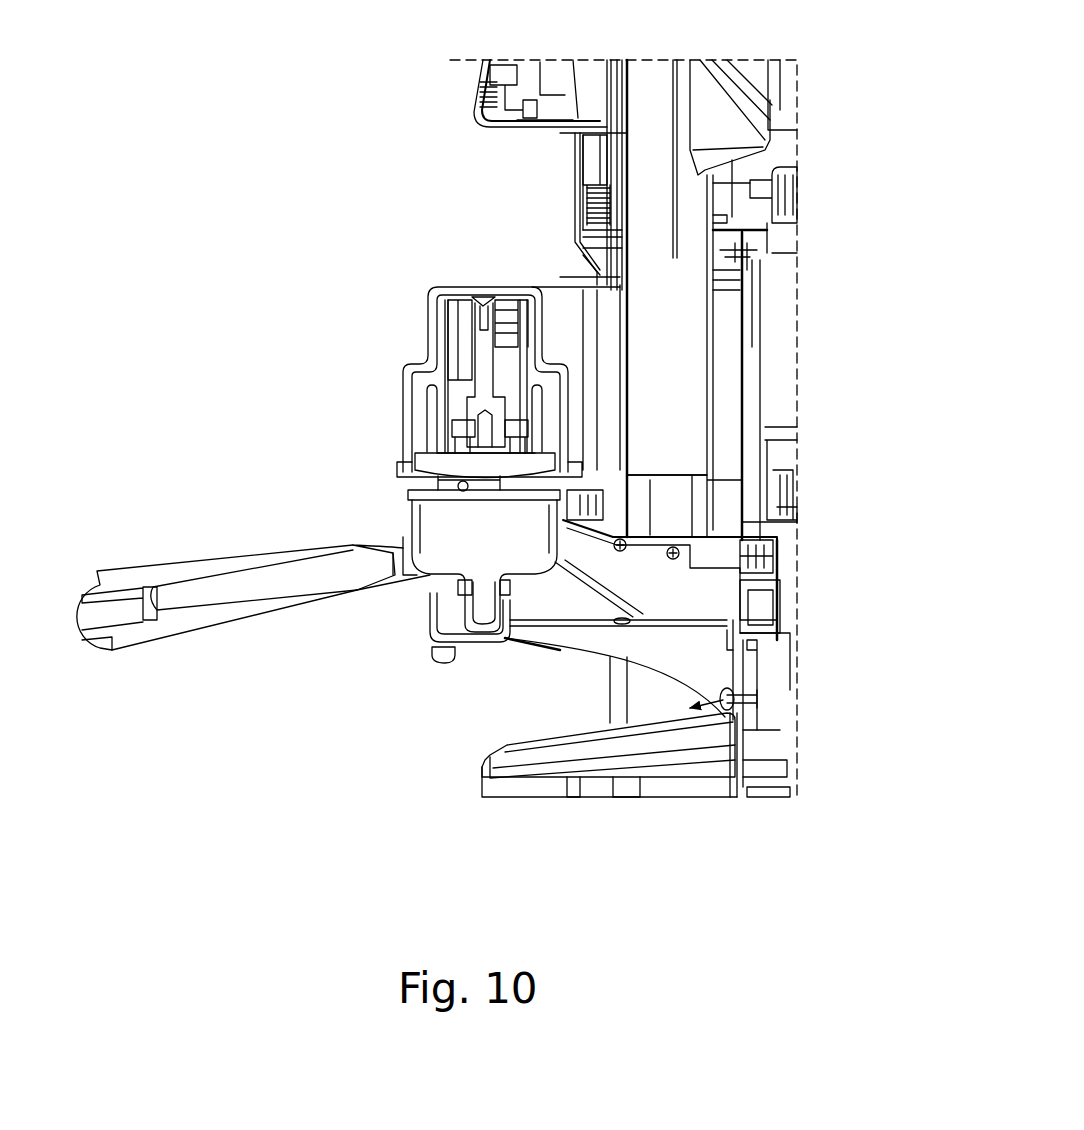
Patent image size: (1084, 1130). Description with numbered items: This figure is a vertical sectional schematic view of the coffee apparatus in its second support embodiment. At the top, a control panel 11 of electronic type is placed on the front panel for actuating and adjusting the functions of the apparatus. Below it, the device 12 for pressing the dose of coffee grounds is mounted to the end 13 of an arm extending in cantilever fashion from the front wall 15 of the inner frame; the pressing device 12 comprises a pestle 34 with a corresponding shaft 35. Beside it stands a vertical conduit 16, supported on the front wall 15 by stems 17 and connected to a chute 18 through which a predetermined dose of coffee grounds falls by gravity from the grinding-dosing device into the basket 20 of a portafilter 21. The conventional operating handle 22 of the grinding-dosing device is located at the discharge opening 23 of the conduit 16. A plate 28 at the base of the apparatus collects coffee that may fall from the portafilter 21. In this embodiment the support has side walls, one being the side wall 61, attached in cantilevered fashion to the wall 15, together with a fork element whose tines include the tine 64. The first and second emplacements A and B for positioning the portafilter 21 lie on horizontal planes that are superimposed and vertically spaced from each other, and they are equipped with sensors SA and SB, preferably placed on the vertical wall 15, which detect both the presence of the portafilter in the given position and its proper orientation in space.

The control panel 11 is at (482, 88).
The device for pressing the dose of coffee grounds 12 is at (416, 268).
The end of the arm 13 is at (560, 285).
The front wall of the inner frame 15 is at (745, 523).
The vertical conduit 16 is at (690, 320).
The stems 17 is at (748, 235).
The chute 18 is at (737, 117).
The basket 20 is at (445, 538).
The portafilter 21 is at (407, 583).
The operating handle 22 is at (137, 583).
The discharge opening 23 is at (667, 475).
The plate 28 is at (692, 765).
The pestle 34 is at (472, 473).
The shaft 35 is at (487, 380).
The side wall 61 is at (647, 548).
The tine 64 is at (530, 624).
The first emplacement A is at (745, 697).
The second emplacement B is at (383, 522).
The sensor SA is at (760, 608).
The sensor SB is at (597, 485).